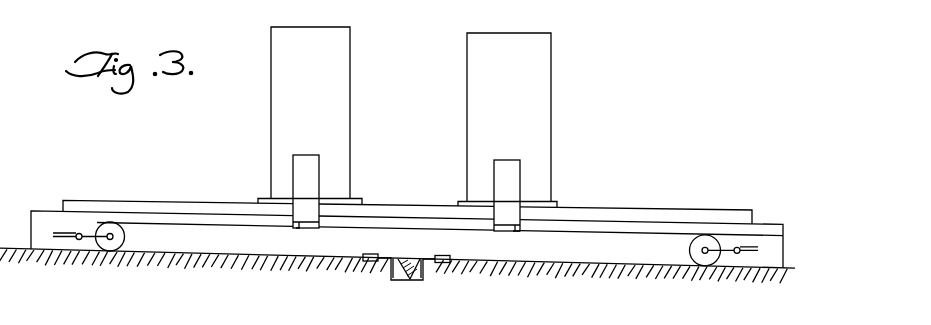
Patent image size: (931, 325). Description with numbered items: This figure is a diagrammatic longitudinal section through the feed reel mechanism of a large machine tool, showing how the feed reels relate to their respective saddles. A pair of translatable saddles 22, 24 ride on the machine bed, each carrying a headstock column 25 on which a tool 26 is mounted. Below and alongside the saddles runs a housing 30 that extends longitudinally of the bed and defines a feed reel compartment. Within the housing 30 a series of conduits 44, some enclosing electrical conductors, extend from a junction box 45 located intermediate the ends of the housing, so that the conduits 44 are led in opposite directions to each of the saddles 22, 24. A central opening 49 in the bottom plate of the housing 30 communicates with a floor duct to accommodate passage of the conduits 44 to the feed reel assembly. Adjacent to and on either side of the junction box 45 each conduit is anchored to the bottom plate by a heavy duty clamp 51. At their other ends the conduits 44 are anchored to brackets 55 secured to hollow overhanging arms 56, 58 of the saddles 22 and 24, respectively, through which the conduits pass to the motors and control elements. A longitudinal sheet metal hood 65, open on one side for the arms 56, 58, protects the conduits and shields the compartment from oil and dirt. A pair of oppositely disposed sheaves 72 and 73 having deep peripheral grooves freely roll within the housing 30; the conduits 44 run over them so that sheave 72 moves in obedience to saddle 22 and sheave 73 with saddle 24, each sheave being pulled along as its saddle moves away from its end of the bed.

The saddle 22 is at (258, 197).
The saddle 24 is at (458, 200).
The headstock column 25 is at (353, 80).
The tool 26 is at (551, 90).
The housing 30 is at (46, 211).
The conduits 44 is at (394, 272).
The junction box 45 is at (420, 274).
The central opening 49 is at (407, 259).
The clamp 51 is at (370, 254).
The bracket 55 is at (298, 229).
The arm 56 is at (319, 168).
The arm 58 is at (520, 180).
The hood 65 is at (141, 205).
The sheave 72 is at (113, 252).
The sheave 73 is at (705, 267).